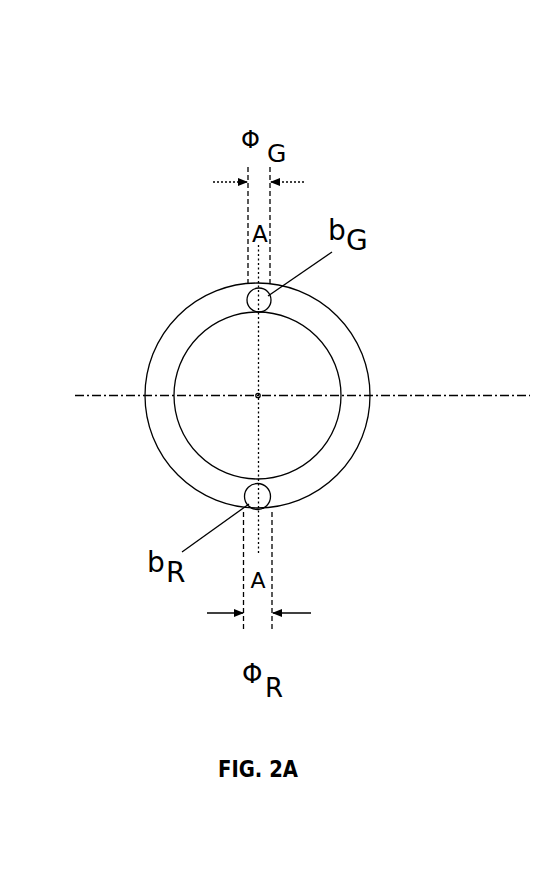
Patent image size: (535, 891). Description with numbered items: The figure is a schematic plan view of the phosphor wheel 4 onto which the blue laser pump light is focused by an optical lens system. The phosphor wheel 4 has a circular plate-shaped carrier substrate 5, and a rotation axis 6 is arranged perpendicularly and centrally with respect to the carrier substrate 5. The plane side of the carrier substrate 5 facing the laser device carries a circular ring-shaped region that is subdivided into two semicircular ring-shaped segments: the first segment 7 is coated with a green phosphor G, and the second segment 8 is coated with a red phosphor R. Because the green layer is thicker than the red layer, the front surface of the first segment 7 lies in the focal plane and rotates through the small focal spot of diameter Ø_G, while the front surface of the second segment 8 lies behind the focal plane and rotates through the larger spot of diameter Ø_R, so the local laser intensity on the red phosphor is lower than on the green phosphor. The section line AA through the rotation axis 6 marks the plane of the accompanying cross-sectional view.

The phosphor wheel 4 is at (118, 113).
The carrier substrate 5 is at (222, 358).
The rotation axis 6 is at (255, 397).
The first segment 7 is at (348, 347).
The second segment 8 is at (308, 477).